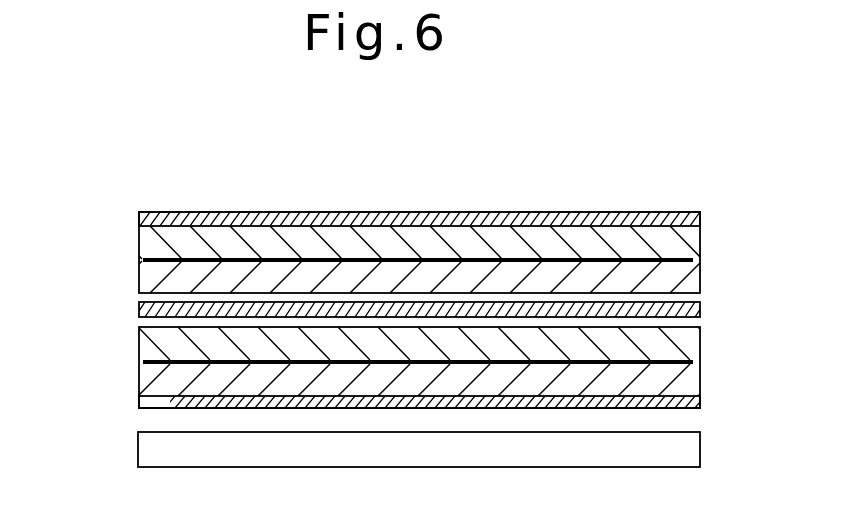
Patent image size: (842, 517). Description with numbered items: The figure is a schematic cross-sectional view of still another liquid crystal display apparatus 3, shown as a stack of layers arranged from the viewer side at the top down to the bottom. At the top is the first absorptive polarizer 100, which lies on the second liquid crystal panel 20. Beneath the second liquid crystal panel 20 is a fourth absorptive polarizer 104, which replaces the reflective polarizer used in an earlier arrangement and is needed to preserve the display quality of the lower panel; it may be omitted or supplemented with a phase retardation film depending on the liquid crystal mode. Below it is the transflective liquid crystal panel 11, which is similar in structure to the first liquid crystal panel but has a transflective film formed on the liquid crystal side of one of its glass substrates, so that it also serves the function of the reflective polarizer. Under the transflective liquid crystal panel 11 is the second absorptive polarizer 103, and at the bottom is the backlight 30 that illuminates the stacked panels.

The liquid crystal display apparatus 3 is at (538, 178).
The second liquid crystal panel 20 is at (410, 248).
The transflective liquid crystal panel 11 is at (406, 373).
The first absorptive polarizer 100 is at (139, 220).
The fourth absorptive polarizer 104 is at (139, 313).
The second absorptive polarizer 103 is at (139, 403).
The backlight 30 is at (700, 445).